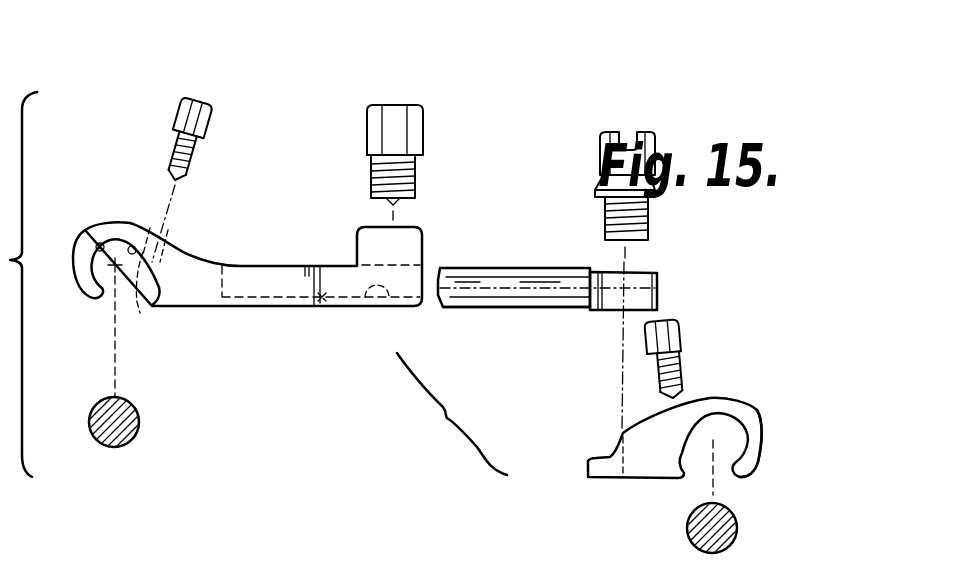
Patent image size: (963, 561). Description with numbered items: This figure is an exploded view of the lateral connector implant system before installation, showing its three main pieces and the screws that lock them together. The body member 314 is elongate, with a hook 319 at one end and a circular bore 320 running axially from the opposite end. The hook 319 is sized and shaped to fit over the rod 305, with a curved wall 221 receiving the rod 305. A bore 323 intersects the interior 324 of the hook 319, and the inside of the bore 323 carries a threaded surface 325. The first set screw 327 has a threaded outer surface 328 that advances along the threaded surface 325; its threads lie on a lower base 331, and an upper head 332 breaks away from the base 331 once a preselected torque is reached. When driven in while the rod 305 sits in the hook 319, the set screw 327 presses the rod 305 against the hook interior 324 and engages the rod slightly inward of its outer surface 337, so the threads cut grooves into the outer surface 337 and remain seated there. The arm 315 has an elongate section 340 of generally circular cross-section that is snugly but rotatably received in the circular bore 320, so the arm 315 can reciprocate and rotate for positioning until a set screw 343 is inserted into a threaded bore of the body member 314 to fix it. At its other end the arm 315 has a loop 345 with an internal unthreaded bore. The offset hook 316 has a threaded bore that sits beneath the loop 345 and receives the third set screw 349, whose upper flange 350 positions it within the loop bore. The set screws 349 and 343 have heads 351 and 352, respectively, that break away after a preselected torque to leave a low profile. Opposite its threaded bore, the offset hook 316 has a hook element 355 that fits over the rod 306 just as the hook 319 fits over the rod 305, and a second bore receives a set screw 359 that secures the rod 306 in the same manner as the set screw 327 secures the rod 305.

The curved wall 221 is at (97, 243).
The rod 305 is at (97, 438).
The rod 306 is at (737, 527).
The body member 314 is at (225, 266).
The arm 315 is at (530, 306).
The offset hook 316 is at (707, 424).
The hook 319 is at (73, 240).
The circular bore 320 is at (384, 313).
The bore 323 is at (182, 180).
The interior 324 is at (132, 246).
The threaded surface 325 is at (148, 287).
The first set screw 327 is at (183, 152).
The threaded outer surface 328 is at (207, 112).
The lower base 331 is at (197, 152).
The upper head 332 is at (193, 118).
The outer surface 337 is at (97, 402).
The elongate section 340 is at (583, 279).
The set screw 343 is at (417, 173).
The loop 345 is at (660, 282).
The third set screw 349 is at (642, 253).
The upper flange 350 is at (656, 187).
The head 351 is at (653, 133).
The head 352 is at (430, 139).
The hook element 355 is at (765, 443).
The set screw 359 is at (686, 340).